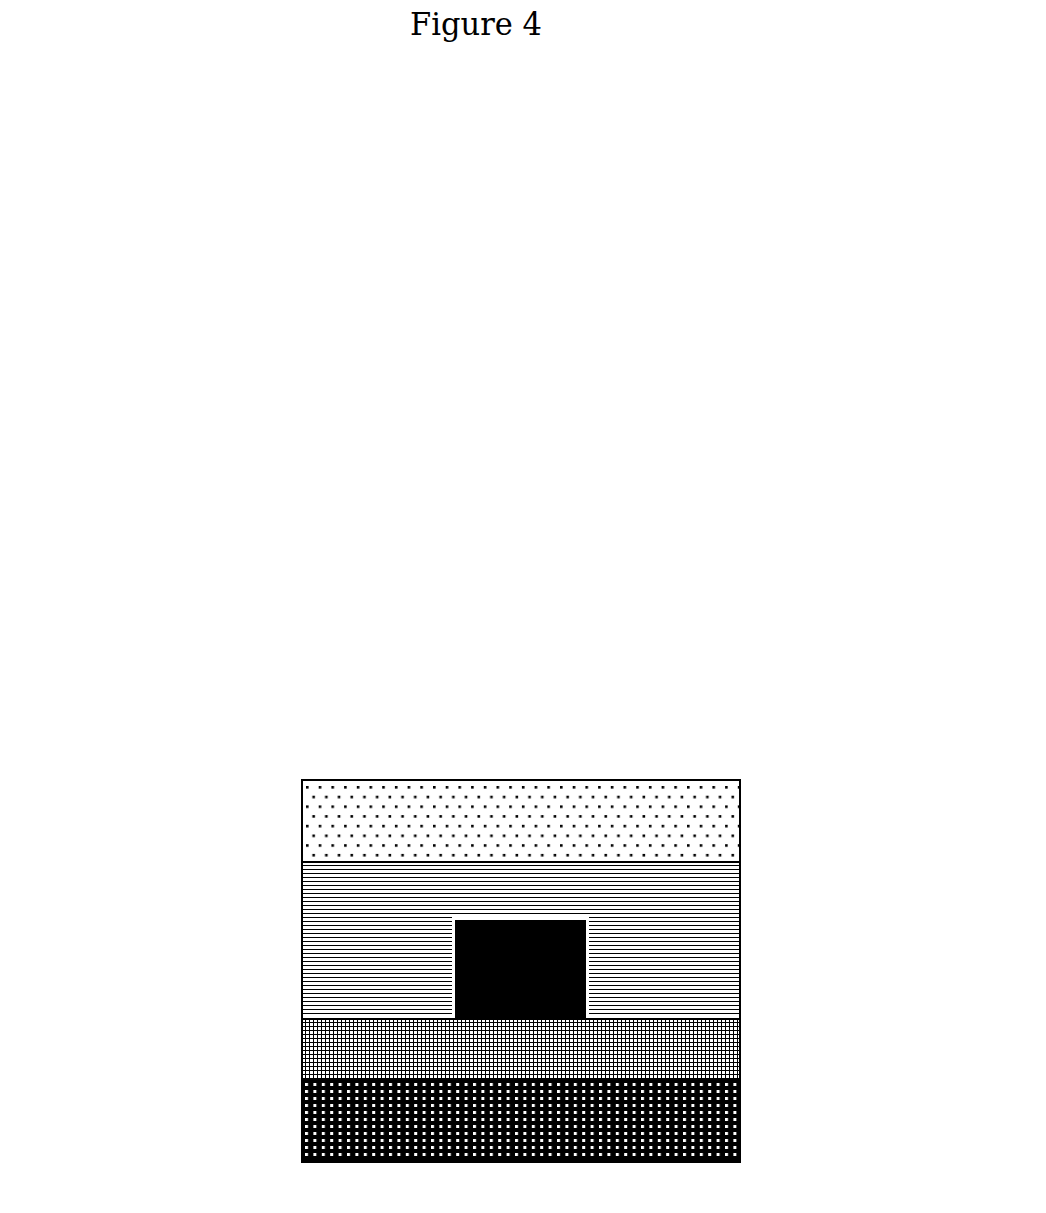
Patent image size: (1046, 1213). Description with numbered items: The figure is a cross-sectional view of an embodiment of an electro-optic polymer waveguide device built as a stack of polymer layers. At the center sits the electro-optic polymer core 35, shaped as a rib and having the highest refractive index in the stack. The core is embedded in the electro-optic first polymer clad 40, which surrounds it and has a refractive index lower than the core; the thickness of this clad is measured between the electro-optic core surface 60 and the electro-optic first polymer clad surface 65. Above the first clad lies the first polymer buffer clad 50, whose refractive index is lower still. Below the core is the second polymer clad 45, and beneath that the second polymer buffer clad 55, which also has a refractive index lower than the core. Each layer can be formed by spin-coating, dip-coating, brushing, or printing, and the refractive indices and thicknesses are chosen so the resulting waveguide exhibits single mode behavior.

The electro-optic polymer core 35 is at (612, 965).
The electro-optic first polymer clad 40 is at (277, 942).
The second polymer clad 45 is at (277, 1052).
The first polymer buffer clad 50 is at (277, 822).
The second polymer buffer clad 55 is at (277, 1122).
The electro-optic core surface 60 is at (509, 900).
The electro-optic first polymer clad surface 65 is at (524, 824).